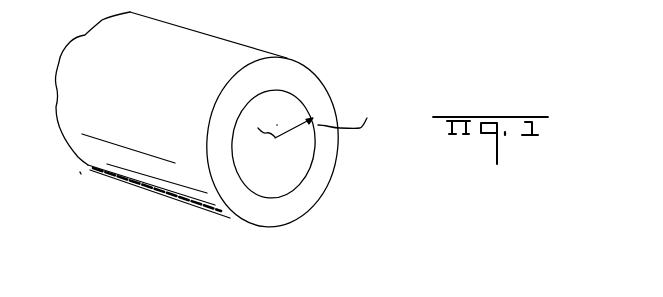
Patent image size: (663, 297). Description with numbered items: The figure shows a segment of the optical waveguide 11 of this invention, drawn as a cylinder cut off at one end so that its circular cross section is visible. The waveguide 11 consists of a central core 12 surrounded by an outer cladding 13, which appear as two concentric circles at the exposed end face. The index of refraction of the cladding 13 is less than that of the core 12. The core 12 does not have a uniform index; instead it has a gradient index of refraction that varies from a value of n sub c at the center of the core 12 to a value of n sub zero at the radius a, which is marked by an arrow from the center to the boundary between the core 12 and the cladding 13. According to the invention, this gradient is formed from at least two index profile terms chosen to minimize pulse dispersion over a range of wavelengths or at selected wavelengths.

The waveguide 11 is at (253, 52).
The core 12 is at (292, 180).
The cladding 13 is at (328, 97).